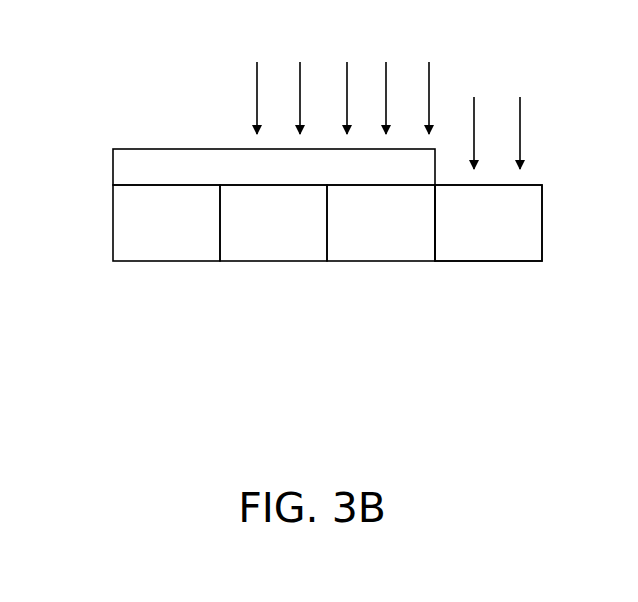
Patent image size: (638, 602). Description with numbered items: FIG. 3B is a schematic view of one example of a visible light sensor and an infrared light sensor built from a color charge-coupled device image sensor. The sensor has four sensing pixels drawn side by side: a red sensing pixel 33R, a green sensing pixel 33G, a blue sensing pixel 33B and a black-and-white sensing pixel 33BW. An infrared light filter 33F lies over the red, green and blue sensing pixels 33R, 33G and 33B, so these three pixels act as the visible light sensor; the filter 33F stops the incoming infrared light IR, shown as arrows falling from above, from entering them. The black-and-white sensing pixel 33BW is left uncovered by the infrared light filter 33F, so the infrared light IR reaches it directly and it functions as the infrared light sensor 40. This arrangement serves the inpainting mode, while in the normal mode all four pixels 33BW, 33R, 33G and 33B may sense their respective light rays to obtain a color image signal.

The infrared light IR is at (388, 94).
The infrared light filter 33F is at (127, 172).
The red sensing pixel 33R is at (166, 223).
The green sensing pixel 33G is at (273, 223).
The blue sensing pixel 33B is at (381, 223).
The black-and-white sensing pixel 33BW is at (488, 223).
The infrared light sensor 40 is at (488, 223).